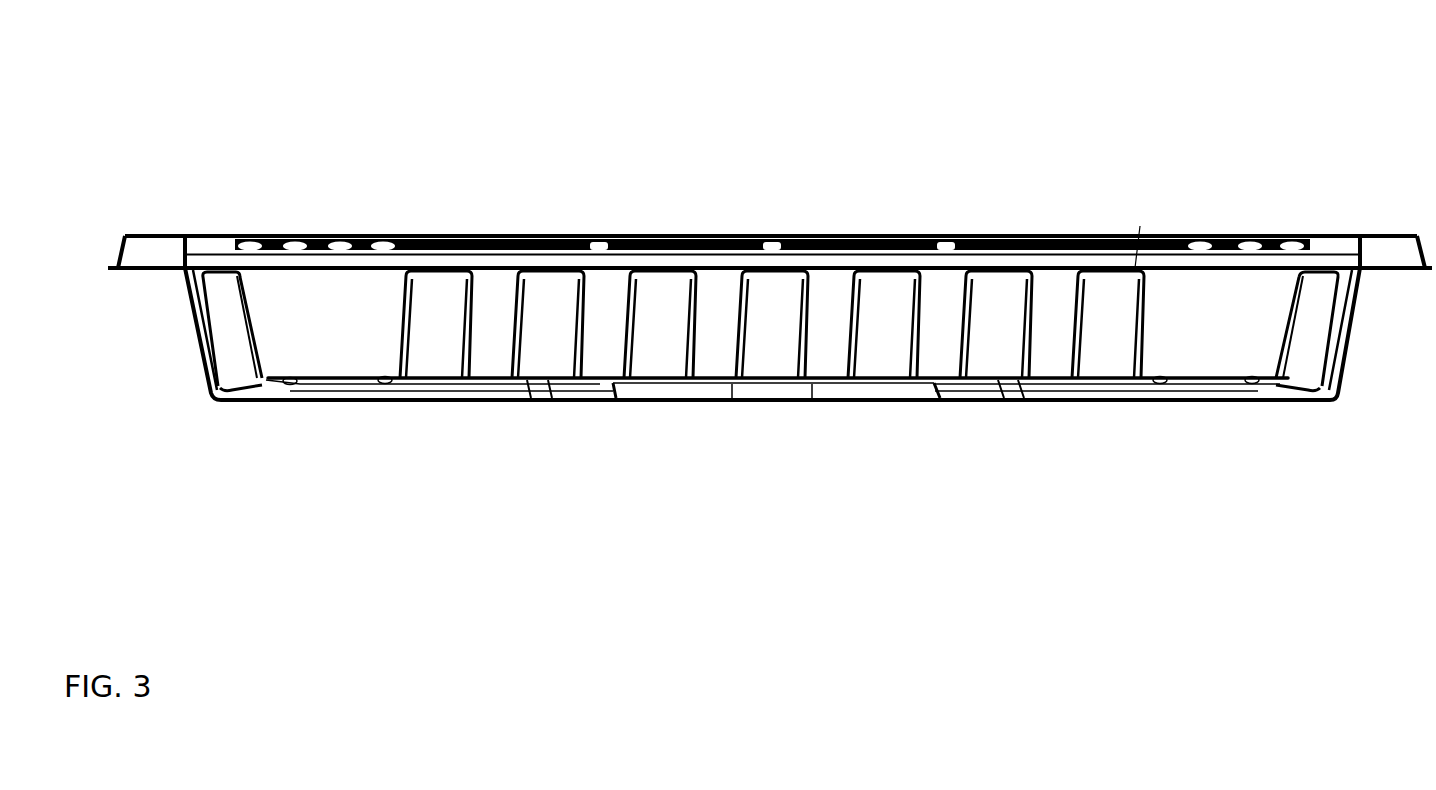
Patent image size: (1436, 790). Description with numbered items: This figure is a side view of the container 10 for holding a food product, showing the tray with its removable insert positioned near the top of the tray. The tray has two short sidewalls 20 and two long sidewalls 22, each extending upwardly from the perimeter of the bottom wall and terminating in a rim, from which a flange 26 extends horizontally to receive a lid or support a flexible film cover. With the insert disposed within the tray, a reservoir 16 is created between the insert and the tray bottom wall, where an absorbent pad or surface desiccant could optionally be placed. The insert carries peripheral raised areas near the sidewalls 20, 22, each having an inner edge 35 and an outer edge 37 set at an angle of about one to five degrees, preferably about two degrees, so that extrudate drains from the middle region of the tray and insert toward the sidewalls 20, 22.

The container 10 is at (851, 168).
The reservoir 16 is at (945, 400).
The short sidewall 20 is at (200, 340).
The long sidewall 22 is at (352, 325).
The flange 26 is at (1394, 234).
The inner edge of the peripheral raised area 35 is at (548, 397).
The outer edge of the peripheral raised area 37 is at (295, 378).